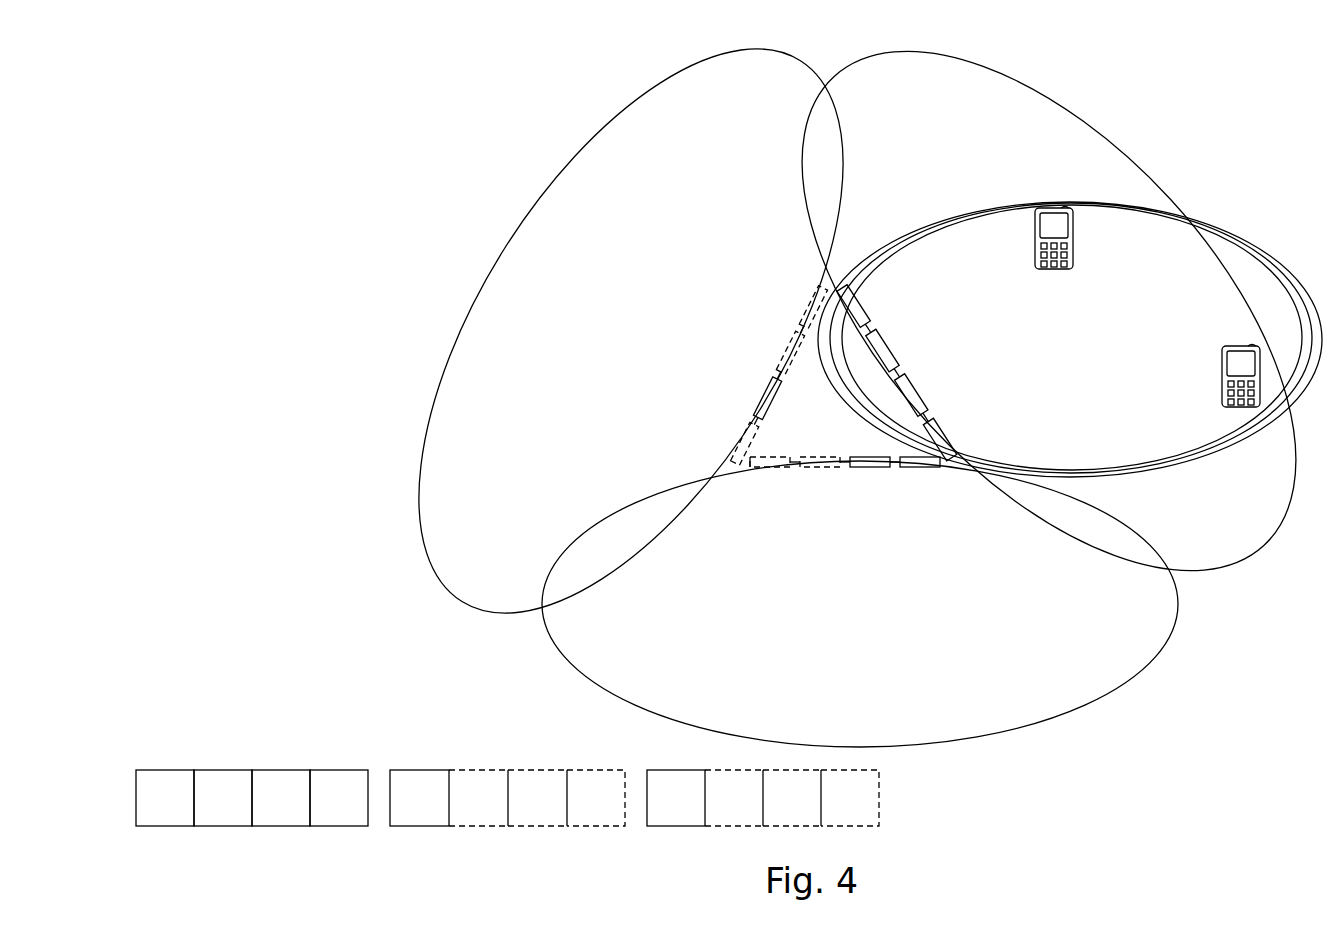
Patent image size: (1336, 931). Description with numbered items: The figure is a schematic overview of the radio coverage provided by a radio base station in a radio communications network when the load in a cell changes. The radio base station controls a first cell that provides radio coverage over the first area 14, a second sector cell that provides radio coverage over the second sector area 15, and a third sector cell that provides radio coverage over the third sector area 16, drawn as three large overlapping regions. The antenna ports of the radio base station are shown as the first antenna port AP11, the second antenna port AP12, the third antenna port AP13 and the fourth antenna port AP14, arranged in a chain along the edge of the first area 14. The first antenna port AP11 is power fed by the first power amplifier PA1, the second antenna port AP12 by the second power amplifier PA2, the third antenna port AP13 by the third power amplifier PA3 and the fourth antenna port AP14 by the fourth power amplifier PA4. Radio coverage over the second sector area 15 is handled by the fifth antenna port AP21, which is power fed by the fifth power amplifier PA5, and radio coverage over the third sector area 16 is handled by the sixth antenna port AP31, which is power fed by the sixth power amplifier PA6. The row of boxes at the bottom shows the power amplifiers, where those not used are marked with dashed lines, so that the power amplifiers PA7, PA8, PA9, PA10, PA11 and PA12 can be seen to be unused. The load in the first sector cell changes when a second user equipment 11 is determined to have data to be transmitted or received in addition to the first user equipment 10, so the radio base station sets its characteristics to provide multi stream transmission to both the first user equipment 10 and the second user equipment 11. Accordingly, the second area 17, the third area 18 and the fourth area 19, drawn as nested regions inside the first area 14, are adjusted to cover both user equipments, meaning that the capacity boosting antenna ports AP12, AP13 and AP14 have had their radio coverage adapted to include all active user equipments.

The first user equipment 10 is at (1073, 250).
The second user equipment 11 is at (1222, 347).
The first area 14 is at (964, 193).
The second sector area 15 is at (697, 193).
The third sector area 16 is at (875, 620).
The second area 17 is at (1070, 342).
The third area 18 is at (1119, 377).
The fourth area 19 is at (1165, 412).
The first antenna port AP11 is at (871, 310).
The second antenna port AP12 is at (887, 346).
The third antenna port AP13 is at (912, 380).
The fourth antenna port AP14 is at (940, 417).
The fifth antenna port AP21 is at (762, 400).
The sixth antenna port AP31 is at (864, 467).
The first power amplifier PA1 is at (165, 798).
The second power amplifier PA2 is at (223, 798).
The third power amplifier PA3 is at (281, 798).
The fourth power amplifier PA4 is at (339, 798).
The fifth power amplifier PA5 is at (419, 798).
The sixth power amplifier PA6 is at (676, 798).
The power amplifier PA7 is at (478, 798).
The power amplifier PA8 is at (537, 798).
The power amplifier PA9 is at (596, 798).
The power amplifier PA10 is at (734, 797).
The power amplifier PA11 is at (792, 797).
The power amplifier PA12 is at (850, 797).